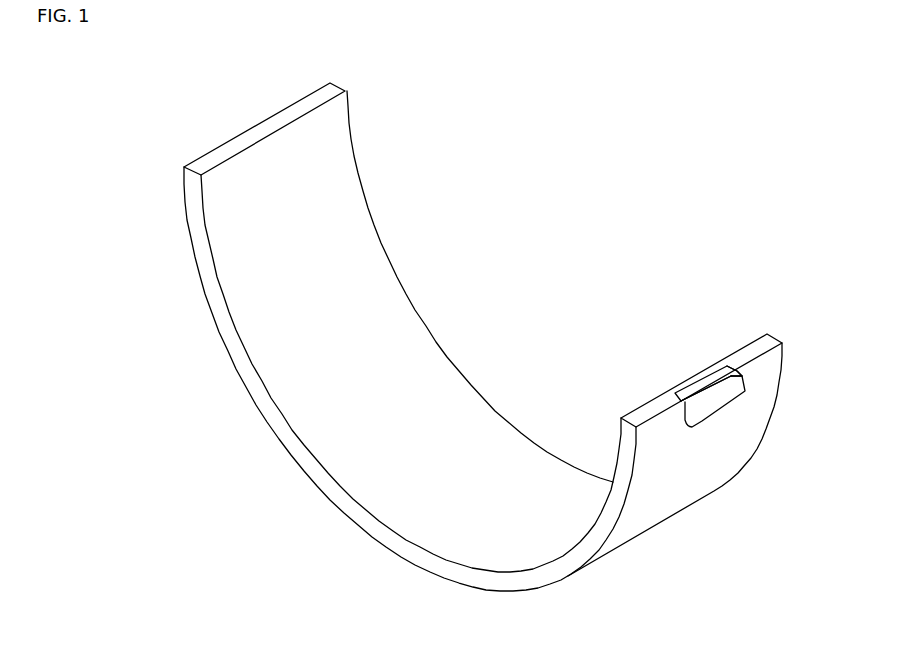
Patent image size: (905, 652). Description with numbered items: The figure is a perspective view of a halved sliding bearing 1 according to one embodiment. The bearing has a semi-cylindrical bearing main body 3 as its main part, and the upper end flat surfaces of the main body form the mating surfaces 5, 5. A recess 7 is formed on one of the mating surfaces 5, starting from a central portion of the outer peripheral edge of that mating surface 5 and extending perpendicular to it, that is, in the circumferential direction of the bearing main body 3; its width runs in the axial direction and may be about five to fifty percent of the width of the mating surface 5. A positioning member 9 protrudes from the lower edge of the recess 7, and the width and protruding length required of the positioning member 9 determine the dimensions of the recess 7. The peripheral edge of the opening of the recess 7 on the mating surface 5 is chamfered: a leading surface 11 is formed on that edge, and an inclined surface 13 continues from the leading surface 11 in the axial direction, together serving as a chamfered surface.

The halved sliding bearing 1 is at (483, 337).
The bearing main body 3 is at (356, 347).
The mating surface 5 is at (258, 128).
The recess 7 is at (720, 387).
The positioning member 9 is at (712, 420).
The leading surface 11 is at (715, 364).
The inclined surface 13 is at (743, 373).